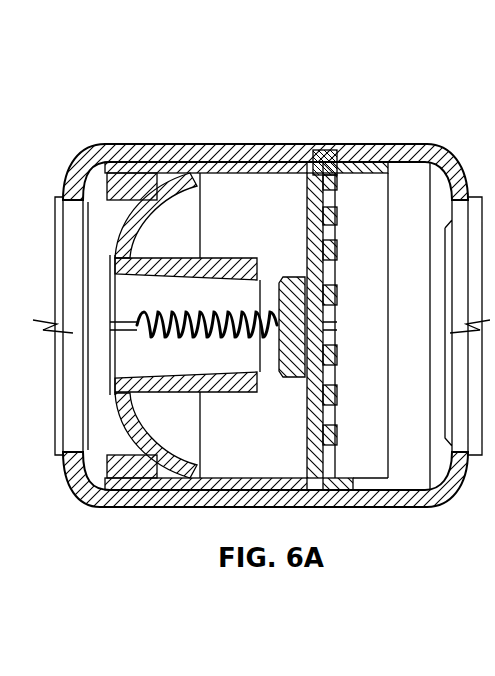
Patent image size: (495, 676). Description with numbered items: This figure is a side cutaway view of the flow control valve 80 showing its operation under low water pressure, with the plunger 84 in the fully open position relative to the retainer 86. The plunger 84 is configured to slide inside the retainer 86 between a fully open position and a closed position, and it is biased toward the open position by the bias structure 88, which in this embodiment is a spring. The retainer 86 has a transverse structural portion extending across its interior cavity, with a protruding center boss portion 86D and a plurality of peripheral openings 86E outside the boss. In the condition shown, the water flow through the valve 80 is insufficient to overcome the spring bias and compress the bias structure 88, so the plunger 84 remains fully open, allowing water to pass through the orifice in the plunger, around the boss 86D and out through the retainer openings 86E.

The flow control valve 80 is at (210, 128).
The plunger structure 84 is at (150, 150).
The retainer structure 86 is at (305, 148).
The center boss portion 86D is at (281, 278).
The peripheral openings 86E is at (325, 188).
The bias structure 88 is at (230, 314).